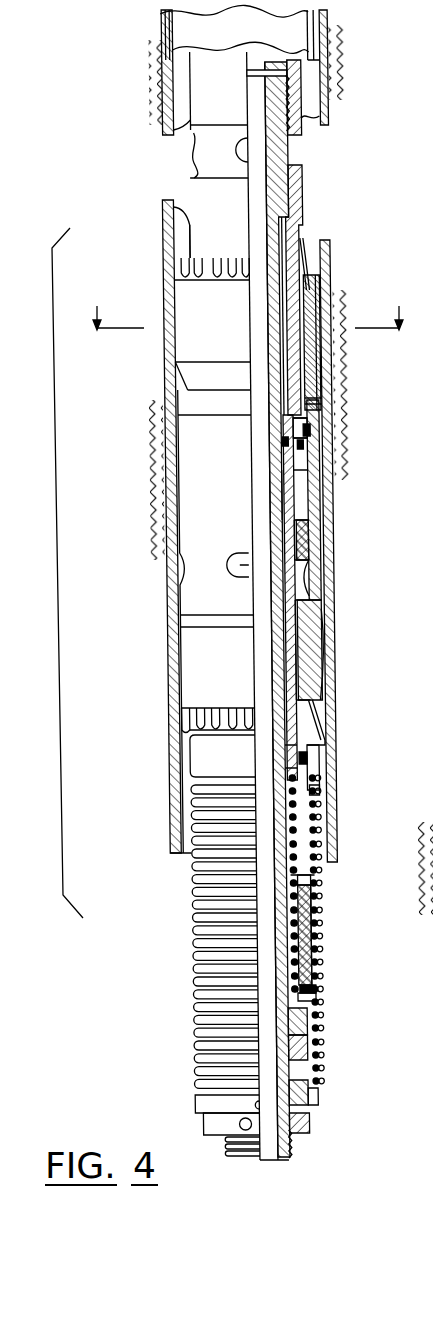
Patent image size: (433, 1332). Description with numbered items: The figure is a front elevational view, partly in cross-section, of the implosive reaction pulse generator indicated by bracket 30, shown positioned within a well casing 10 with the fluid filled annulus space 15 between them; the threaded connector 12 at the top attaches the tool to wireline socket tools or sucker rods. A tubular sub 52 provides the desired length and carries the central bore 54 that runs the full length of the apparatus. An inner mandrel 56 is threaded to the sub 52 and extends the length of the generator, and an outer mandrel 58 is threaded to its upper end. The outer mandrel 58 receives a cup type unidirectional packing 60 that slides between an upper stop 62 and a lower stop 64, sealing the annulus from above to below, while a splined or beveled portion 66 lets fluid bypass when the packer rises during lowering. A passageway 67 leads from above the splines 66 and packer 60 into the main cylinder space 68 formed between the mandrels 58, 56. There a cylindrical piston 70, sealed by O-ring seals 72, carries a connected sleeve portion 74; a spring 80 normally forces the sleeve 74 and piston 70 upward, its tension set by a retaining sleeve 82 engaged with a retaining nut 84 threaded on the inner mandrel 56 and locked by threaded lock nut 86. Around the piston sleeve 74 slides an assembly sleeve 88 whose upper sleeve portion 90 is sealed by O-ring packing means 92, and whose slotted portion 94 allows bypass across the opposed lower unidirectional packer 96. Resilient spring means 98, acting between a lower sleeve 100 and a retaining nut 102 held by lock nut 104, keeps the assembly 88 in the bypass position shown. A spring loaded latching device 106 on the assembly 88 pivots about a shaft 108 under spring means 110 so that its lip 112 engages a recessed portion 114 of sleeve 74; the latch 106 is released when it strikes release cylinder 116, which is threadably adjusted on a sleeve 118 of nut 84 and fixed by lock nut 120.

The well casing 10 is at (172, 25).
The threaded connector 12 is at (249, 306).
The annulus space 15 is at (180, 91).
The implosive reaction pulse generator 30 is at (54, 573).
The tubular sub 52 is at (297, 75).
The central bore 54 is at (256, 96).
The inner mandrel 56 is at (291, 155).
The outer mandrel 58 is at (298, 197).
The unidirectional packing 60 is at (323, 292).
The upper stop 62 is at (326, 302).
The lower stop 64 is at (333, 398).
The splined or beveled portion 66 is at (290, 330).
The passageway 67 is at (289, 253).
The main cylinder space 68 is at (293, 425).
The cylindrical piston 70 is at (308, 431).
The O-ring type seals 72 is at (302, 445).
The sleeve portion 74 is at (282, 494).
The spring 80 is at (297, 821).
The retaining sleeve 82 is at (307, 930).
The retaining nut 84 is at (311, 1023).
The threaded lock nut 86 is at (313, 1050).
The assembly sleeve 88 is at (298, 697).
The upper sleeve portion 90 is at (309, 533).
The O-ring packing means 92 is at (298, 532).
The splined or slotted portion 94 is at (303, 648).
The unidirectional packer 96 is at (333, 651).
The resilient spring means 98 is at (310, 992).
The lower sleeve 100 is at (327, 791).
The retaining nut 102 is at (320, 1100).
The lock nut 104 is at (313, 1127).
The spring loaded latching device 106 is at (320, 777).
The shaft 108 is at (323, 716).
The spring means 110 is at (323, 757).
The lip 112 is at (294, 766).
The recessed portion 114 is at (291, 749).
The release cylinder 116 is at (307, 882).
The sleeve 118 is at (310, 958).
The lock nut 120 is at (312, 1000).